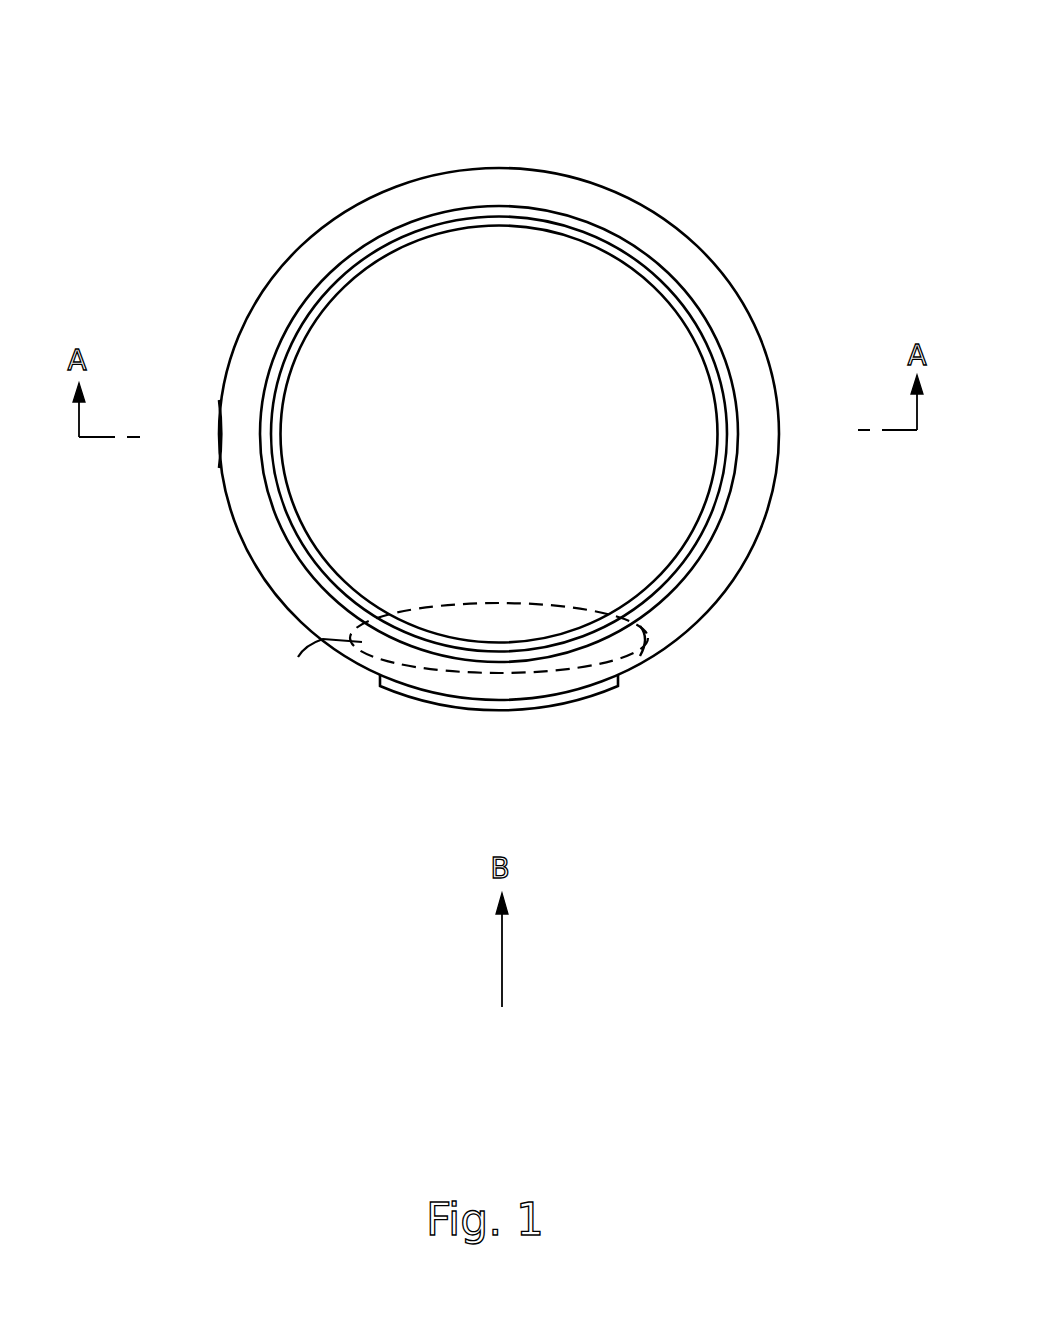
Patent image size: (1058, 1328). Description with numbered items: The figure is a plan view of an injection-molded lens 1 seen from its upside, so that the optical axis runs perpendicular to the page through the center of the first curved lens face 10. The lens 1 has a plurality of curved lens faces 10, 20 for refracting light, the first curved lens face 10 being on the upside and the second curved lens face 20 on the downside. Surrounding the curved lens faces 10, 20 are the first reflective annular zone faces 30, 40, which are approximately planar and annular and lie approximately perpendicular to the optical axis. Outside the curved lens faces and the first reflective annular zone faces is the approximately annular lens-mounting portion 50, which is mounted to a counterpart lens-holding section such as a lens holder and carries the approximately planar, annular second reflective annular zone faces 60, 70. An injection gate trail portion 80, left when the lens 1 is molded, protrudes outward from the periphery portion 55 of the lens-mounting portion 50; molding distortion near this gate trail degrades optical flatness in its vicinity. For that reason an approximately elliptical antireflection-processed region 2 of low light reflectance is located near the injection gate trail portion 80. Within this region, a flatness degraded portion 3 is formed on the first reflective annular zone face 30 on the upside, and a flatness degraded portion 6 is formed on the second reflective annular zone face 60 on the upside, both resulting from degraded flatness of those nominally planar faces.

The lens 1 is at (800, 92).
The first curved lens face 10 is at (560, 278).
The second curved lens face 20 is at (417, 267).
The first reflective annular zone face 30 is at (643, 273).
The first reflective annular zone face 40 is at (348, 275).
The lens-mounting portion 50 is at (755, 398).
The periphery portion 55 is at (223, 383).
The second reflective annular zone face 60 is at (716, 297).
The second reflective annular zone face 70 is at (283, 292).
The injection gate trail portion 80 is at (500, 711).
The antireflection-processed region 2 is at (640, 656).
The flatness degraded portion 3 is at (362, 660).
The flatness degraded portion 6 is at (298, 657).